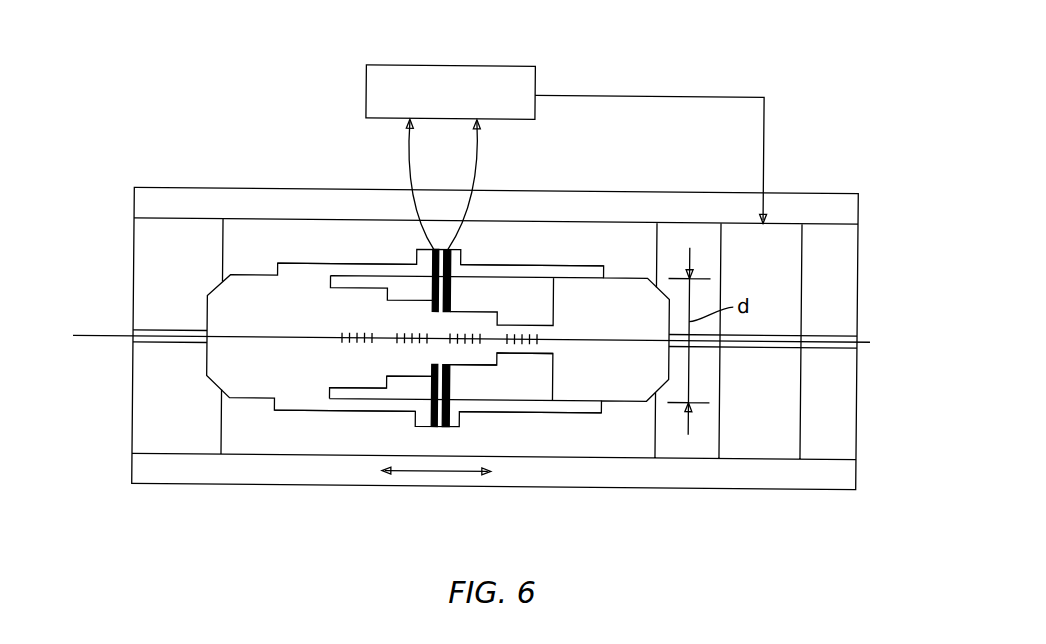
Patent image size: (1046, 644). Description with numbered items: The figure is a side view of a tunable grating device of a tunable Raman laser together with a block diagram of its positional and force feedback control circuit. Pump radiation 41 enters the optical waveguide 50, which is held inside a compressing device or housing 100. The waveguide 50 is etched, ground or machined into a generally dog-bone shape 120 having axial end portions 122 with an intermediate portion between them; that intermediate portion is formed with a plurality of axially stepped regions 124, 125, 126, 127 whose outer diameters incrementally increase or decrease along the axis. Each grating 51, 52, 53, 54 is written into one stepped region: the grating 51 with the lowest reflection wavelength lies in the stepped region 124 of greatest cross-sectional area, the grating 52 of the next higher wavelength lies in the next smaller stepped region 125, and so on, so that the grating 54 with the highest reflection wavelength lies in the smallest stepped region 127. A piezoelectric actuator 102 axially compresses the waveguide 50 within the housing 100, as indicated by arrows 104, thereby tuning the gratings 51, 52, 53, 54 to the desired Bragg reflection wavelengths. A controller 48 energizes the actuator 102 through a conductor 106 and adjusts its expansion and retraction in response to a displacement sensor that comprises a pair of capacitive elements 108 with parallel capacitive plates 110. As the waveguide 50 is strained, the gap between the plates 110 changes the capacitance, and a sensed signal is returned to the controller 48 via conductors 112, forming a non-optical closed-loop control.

The pump radiation 41 is at (118, 317).
The controller 48 is at (449, 63).
The optical waveguide 50 is at (248, 273).
The grating 51 is at (340, 341).
The grating 52 is at (393, 341).
The grating 53 is at (482, 337).
The grating 54 is at (538, 340).
The compressing device or housing 100 is at (263, 188).
The actuator 102 is at (782, 252).
The arrows 104 is at (450, 472).
The conductor / displacement sensor 106 is at (663, 95).
The capacitive elements 108 is at (317, 265).
The capacitive plates 110 is at (431, 291).
The conductors 112 is at (403, 151).
The dog-bone shape 120 is at (252, 403).
The axial end portions / intermediate portion 122 is at (403, 380).
The stepped region 124 is at (373, 377).
The stepped region 125 is at (448, 396).
The stepped region 126 is at (482, 357).
The stepped region 127 is at (523, 355).